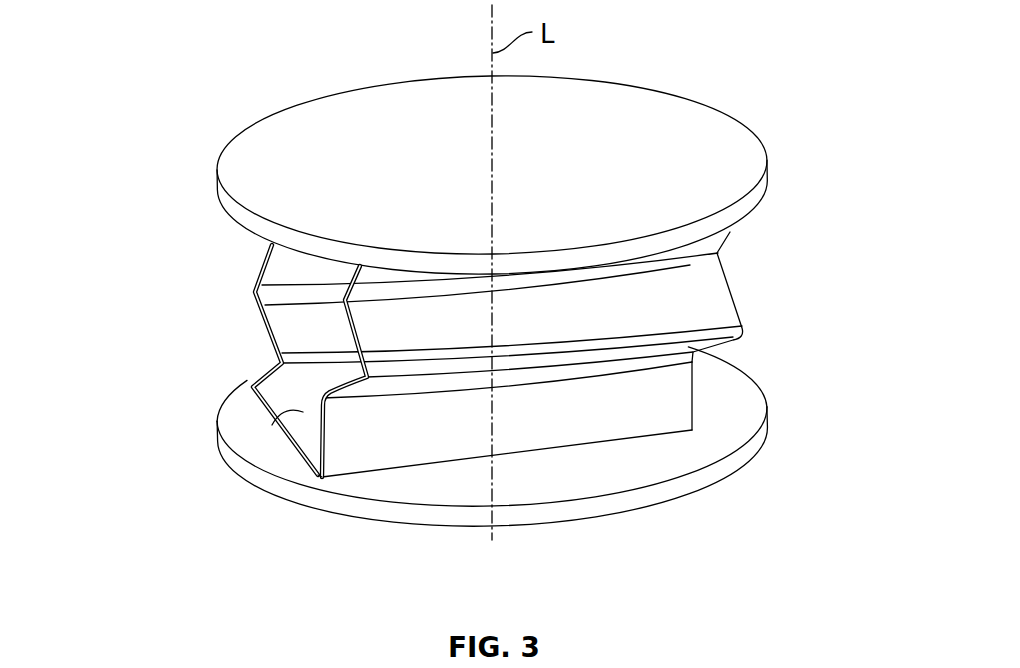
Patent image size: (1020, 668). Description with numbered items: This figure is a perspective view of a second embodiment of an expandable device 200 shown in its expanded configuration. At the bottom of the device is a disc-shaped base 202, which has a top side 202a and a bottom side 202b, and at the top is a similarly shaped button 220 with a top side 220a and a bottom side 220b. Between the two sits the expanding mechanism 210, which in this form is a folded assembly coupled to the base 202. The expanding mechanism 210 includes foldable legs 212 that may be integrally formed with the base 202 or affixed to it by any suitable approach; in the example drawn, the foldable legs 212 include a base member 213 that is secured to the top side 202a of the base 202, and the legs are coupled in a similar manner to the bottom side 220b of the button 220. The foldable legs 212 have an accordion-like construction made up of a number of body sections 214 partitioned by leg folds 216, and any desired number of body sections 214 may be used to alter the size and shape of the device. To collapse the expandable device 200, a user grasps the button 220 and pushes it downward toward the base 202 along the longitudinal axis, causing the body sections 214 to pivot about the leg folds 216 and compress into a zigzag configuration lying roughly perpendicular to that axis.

The expandable device 200 is at (148, 83).
The base 202 is at (723, 428).
The top side of the base 202a is at (643, 475).
The bottom side of the base 202b is at (570, 525).
The expanding mechanism 210 is at (243, 322).
The foldable legs 212 is at (257, 290).
The base member 213 is at (272, 425).
The body sections 214 is at (693, 302).
The leg folds 216 is at (718, 253).
The button 220 is at (743, 157).
The top side of the button 220a is at (688, 127).
The bottom side of the button 220b is at (762, 212).